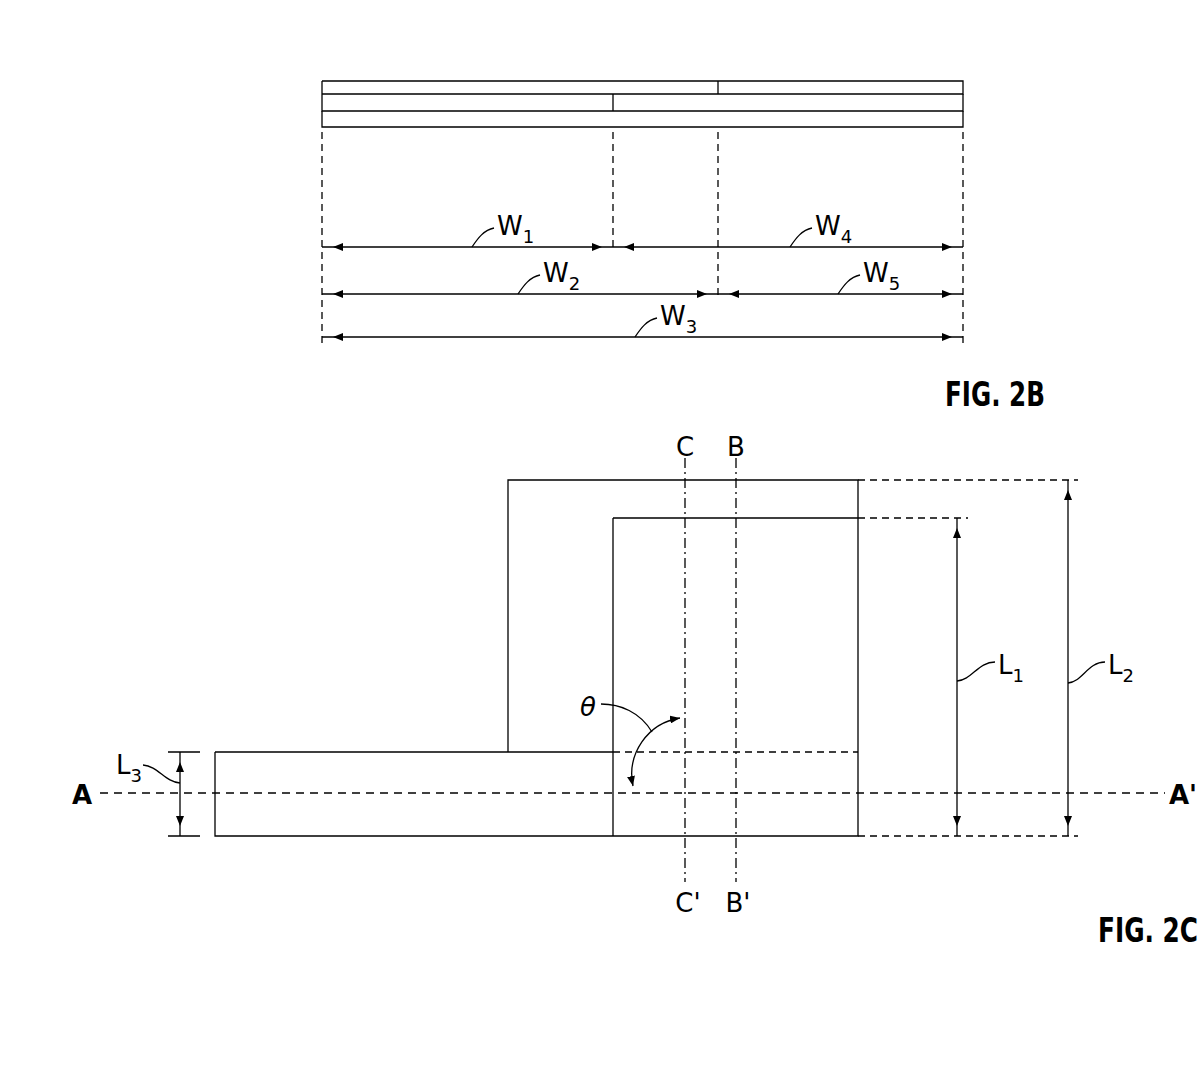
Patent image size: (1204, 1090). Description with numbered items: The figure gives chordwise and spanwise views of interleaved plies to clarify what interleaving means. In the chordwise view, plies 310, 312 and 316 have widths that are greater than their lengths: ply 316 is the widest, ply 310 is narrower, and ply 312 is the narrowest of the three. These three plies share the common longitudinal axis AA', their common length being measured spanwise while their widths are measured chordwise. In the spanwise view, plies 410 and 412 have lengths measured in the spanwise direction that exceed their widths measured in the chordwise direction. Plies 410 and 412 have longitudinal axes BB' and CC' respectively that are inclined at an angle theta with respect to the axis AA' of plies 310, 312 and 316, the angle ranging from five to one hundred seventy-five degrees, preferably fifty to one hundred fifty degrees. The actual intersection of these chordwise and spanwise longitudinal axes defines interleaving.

In FIG. 2B, the ply 310 is at (438, 90).
In FIG. 2C, the ply 310 is at (377, 776).
In FIG. 2B, the ply 312 is at (330, 102).
In FIG. 2C, the ply 312 is at (562, 823).
In FIG. 2B, the ply 316 is at (435, 117).
In FIG. 2C, the ply 316 is at (812, 823).
In FIG. 2B, the ply 410 is at (848, 90).
In FIG. 2C, the ply 410 is at (828, 660).
In FIG. 2B, the ply 412 is at (960, 100).
In FIG. 2C, the ply 412 is at (507, 584).